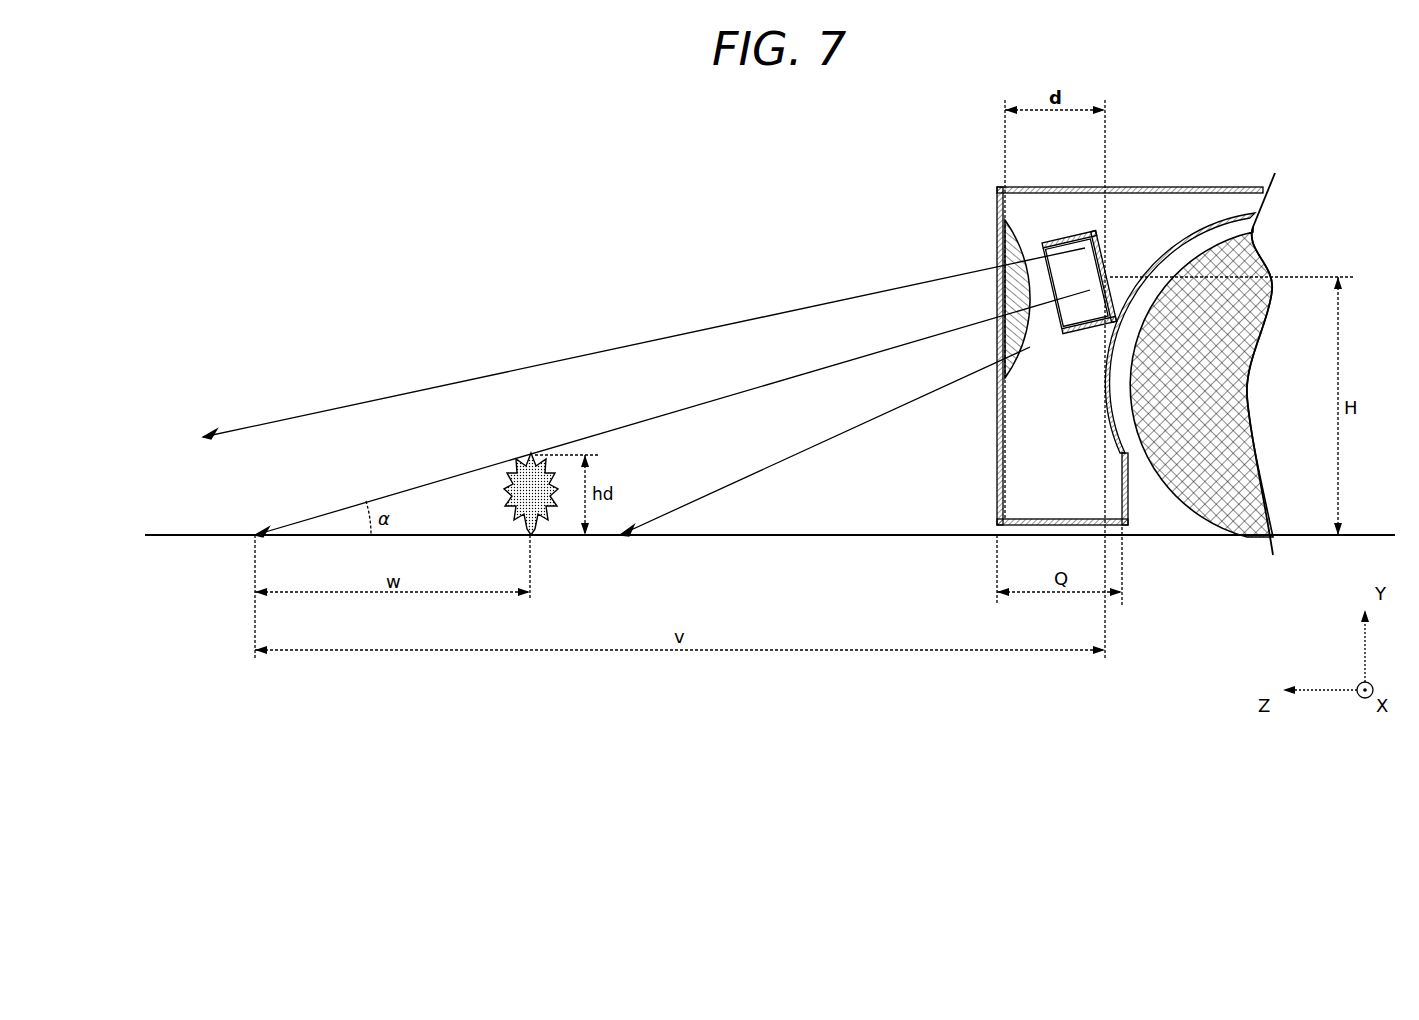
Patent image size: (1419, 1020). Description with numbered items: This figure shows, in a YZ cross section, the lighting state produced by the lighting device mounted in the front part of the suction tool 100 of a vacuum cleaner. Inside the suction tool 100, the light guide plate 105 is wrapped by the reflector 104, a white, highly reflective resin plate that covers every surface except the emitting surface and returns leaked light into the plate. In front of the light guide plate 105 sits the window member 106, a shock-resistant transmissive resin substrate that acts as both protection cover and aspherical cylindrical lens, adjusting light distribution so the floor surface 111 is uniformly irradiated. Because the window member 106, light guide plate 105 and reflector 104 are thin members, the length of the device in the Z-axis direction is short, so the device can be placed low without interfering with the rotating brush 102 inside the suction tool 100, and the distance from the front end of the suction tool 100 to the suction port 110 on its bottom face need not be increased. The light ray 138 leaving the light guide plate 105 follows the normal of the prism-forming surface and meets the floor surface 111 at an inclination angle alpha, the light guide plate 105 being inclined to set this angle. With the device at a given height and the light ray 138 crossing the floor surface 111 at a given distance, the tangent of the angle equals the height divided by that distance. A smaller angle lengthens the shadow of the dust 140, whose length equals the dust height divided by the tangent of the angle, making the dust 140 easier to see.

The suction tool 100 is at (1185, 186).
The rotating brush 102 is at (1238, 508).
The reflector 104 is at (1062, 238).
The light guide plate 105 is at (1088, 338).
The window member 106 is at (1005, 240).
The suction port 110 is at (1152, 508).
The floor surface 111 is at (200, 538).
The light ray 138 is at (658, 413).
The dust 140 is at (507, 506).